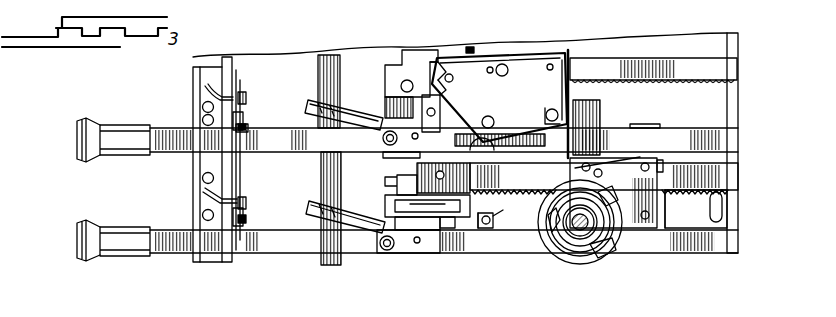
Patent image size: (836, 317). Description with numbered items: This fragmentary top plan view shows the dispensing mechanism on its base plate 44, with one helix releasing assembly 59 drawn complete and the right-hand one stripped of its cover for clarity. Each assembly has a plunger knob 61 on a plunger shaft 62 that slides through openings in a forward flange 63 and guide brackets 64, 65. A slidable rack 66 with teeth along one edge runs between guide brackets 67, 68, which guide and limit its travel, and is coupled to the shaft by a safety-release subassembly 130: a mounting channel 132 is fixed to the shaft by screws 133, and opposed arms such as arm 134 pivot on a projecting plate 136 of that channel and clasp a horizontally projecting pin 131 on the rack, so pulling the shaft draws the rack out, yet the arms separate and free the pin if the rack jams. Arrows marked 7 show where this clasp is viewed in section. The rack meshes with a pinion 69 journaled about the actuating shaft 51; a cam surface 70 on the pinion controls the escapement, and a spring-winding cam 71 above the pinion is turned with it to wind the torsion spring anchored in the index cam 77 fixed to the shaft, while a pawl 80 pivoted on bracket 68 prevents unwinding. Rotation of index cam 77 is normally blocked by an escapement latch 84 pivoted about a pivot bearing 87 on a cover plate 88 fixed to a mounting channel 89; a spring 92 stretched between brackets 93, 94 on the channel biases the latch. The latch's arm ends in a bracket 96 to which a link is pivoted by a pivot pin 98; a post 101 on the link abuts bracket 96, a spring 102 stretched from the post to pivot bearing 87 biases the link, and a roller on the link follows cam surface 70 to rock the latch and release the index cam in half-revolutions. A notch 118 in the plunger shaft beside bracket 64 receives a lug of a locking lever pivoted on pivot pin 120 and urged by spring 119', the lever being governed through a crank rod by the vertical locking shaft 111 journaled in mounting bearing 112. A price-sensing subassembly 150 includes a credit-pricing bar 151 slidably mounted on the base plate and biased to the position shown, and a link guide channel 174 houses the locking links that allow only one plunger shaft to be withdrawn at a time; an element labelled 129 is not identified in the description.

The section line indicator 7 is at (297, 212).
The base plate 44 is at (243, 125).
The actuating shaft 51 is at (490, 118).
The helix releasing assembly 59 is at (530, 282).
The plunger knob 61 is at (95, 157).
The plunger shaft 62 is at (167, 157).
The forward flange 63 is at (193, 85).
The guide bracket 64 is at (231, 252).
The guide bracket 65 is at (573, 127).
The slidable rack 66 is at (608, 68).
The guide bracket 67 is at (472, 52).
The guide bracket 68 is at (690, 165).
The pinion 69 is at (584, 256).
The cam surface 70 is at (606, 248).
The spring-winding cam 71 is at (613, 250).
The index cam 77 is at (563, 240).
The pawl 80 is at (600, 189).
The escapement latch 84 is at (551, 63).
The pivot bearing 87 is at (505, 66).
The cover plate 88 is at (567, 55).
The mounting channel 89 is at (640, 157).
The spring 92 is at (518, 130).
The bracket 93 is at (452, 120).
The bracket 94 is at (550, 113).
The bracket 96 is at (441, 98).
The pivot pin 98 is at (470, 85).
The post 101 is at (425, 96).
The spring 102 is at (436, 96).
The vertical locking shaft 111 is at (493, 222).
The mounting bearing 112 is at (497, 226).
The notch 118 is at (262, 112).
The spring 119' is at (258, 122).
The pivot pin 120 is at (241, 125).
The spring wire 129 is at (205, 92).
The safety-release subassembly 130 is at (398, 52).
The projecting pin 131 is at (395, 183).
The mounting channel 132 is at (382, 138).
The screws 133 is at (386, 112).
The opposed arm 134 is at (392, 82).
The projecting plate 136 is at (452, 227).
The price-sensing subassembly 150 is at (307, 119).
The credit-pricing bar 151 is at (319, 78).
The link guide channel 174 is at (590, 153).